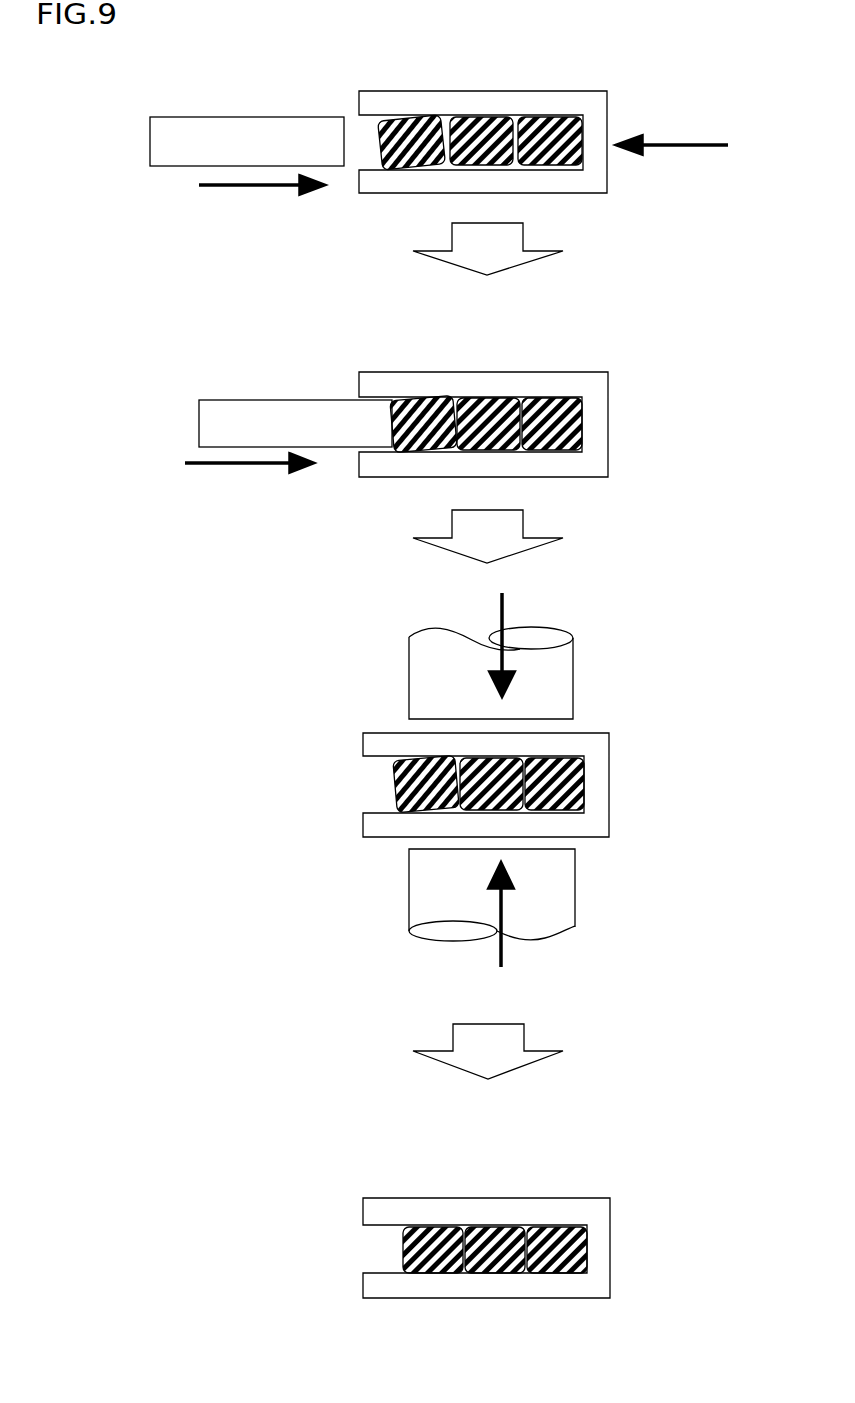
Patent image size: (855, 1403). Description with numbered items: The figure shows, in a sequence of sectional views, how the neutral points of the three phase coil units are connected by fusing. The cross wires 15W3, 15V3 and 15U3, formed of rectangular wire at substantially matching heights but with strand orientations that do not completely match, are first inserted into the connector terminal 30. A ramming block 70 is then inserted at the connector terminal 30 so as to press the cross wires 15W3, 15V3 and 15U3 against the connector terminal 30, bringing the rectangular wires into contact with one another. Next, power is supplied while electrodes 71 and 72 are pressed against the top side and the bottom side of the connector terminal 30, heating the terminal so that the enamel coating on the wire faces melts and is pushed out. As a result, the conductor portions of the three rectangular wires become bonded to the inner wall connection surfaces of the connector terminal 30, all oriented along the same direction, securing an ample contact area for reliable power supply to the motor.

The ramming block 70 is at (243, 117).
The connector terminal 30 is at (582, 91).
The cross wire 15U3 is at (392, 117).
The cross wire 15V3 is at (476, 117).
The cross wire 15W3 is at (547, 117).
The electrode 71 is at (573, 661).
The electrode 72 is at (575, 879).